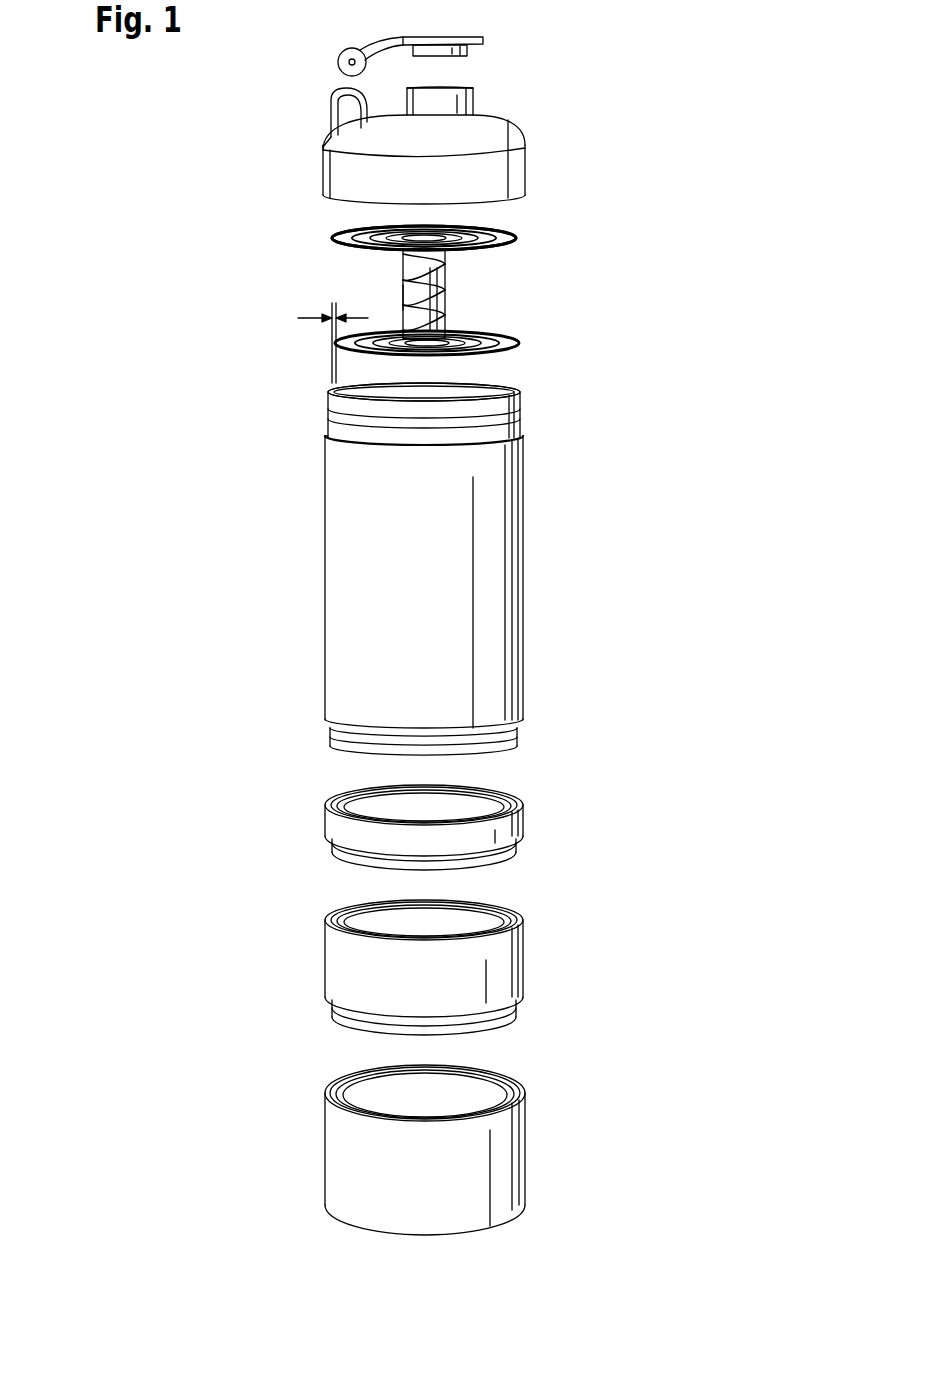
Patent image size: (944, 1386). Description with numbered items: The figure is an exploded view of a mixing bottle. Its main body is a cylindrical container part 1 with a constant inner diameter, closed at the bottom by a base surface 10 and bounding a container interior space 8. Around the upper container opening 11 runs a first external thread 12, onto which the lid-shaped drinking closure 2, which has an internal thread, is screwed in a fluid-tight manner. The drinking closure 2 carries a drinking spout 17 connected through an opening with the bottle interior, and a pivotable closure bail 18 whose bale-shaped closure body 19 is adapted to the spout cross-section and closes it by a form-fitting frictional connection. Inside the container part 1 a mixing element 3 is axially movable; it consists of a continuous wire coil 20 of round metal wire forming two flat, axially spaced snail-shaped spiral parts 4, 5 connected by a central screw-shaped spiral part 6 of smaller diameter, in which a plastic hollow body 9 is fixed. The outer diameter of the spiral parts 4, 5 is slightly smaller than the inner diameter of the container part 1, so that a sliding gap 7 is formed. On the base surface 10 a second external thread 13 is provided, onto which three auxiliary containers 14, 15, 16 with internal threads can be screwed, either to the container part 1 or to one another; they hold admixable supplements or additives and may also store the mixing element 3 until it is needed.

The cylindrical container part 1 is at (512, 587).
The drinking closure 2 is at (510, 160).
The mixing element 3 is at (516, 241).
The snail-shaped spiral part 4 is at (337, 241).
The snail-shaped spiral part 5 is at (521, 343).
The screw-shaped spiral part 6 is at (403, 280).
The sliding gap 7 is at (330, 333).
The container interior space 8 is at (480, 385).
The hollow body 9 is at (402, 297).
The base surface 10 is at (495, 755).
The upper container opening 11 is at (468, 378).
The first external thread 12 is at (523, 408).
The second external thread 13 is at (507, 743).
The auxiliary container 14 is at (513, 822).
The auxiliary container 15 is at (513, 950).
The auxiliary container 16 is at (503, 1143).
The drinking spout 17 is at (458, 100).
The closure bail 18 is at (383, 42).
The closure body 19 is at (455, 50).
The wire coil 20 is at (420, 268).